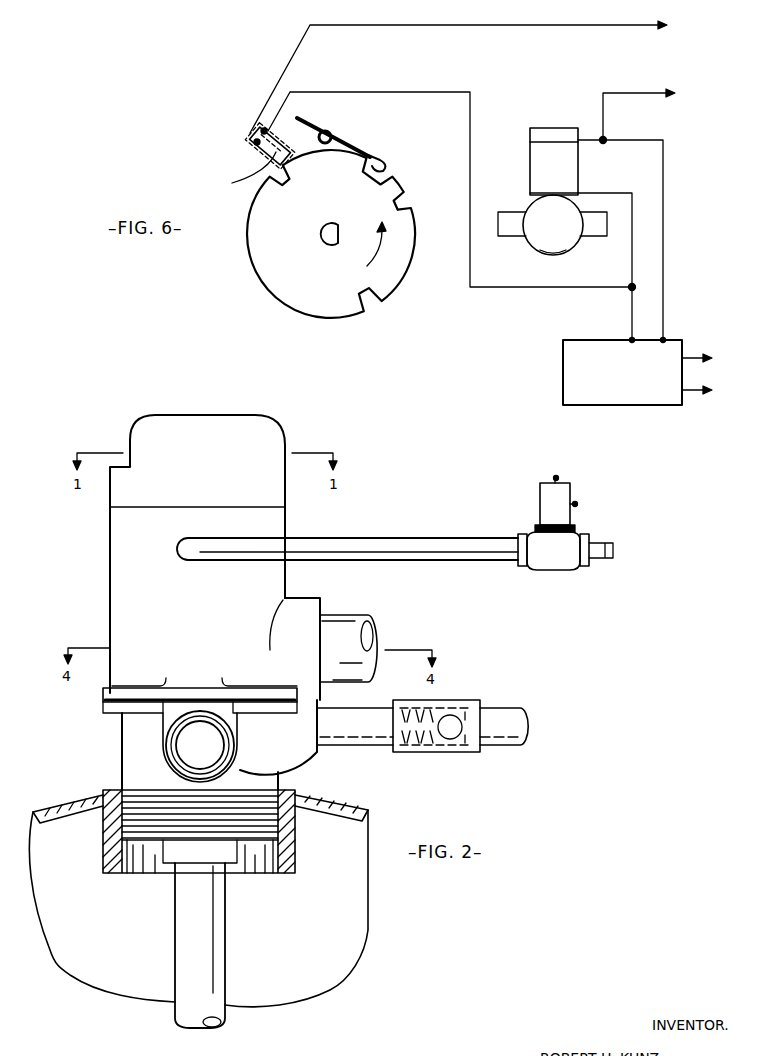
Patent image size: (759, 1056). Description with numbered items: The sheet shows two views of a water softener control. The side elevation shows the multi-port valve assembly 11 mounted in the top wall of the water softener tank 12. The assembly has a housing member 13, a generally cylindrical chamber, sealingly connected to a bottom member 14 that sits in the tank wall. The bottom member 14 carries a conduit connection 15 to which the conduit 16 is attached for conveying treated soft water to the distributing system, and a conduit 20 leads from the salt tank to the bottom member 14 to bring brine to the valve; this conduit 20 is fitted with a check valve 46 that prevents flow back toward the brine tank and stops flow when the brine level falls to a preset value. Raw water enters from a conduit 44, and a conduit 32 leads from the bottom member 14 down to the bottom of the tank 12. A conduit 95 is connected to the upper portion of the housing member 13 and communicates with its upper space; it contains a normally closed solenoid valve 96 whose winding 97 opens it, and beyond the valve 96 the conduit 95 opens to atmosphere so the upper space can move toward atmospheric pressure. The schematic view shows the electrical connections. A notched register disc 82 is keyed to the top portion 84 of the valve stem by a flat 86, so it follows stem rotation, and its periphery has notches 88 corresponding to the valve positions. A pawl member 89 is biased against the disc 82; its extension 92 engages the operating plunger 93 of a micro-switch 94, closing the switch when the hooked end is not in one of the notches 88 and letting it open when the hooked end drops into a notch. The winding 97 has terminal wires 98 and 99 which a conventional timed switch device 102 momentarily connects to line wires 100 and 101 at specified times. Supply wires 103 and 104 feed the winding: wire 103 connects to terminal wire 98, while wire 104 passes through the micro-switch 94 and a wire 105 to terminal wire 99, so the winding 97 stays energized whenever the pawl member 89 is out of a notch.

In FIG. 2, the multi-port valve assembly 11 is at (88, 693).
In FIG. 2, the tank 12 is at (82, 800).
In FIG. 2, the housing member 13 is at (113, 581).
In FIG. 2, the bottom member 14 is at (121, 742).
In FIG. 2, the conduit connection 15 is at (236, 743).
In FIG. 2, the conduit 16 is at (232, 757).
In FIG. 2, the conduit 20 is at (492, 711).
In FIG. 2, the conduit 32 is at (173, 933).
In FIG. 2, the conduit 44 is at (376, 654).
In FIG. 2, the check valve 46 is at (462, 753).
In FIG. 6, the register disc 82 is at (256, 267).
In FIG. 6, the top portion of stem 84 is at (323, 240).
In FIG. 6, the flat 86 is at (339, 234).
In FIG. 6, the notches 88 is at (412, 205).
In FIG. 6, the pawl member 89 is at (384, 158).
In FIG. 6, the extension 92 is at (320, 126).
In FIG. 6, the operating plunger 93 is at (290, 128).
In FIG. 6, the micro-switch 94 is at (240, 173).
In FIG. 6, the conduit 95 is at (514, 213).
In FIG. 2, the conduit 95 is at (425, 540).
In FIG. 6, the solenoid valve 96 is at (541, 248).
In FIG. 2, the solenoid valve 96 is at (562, 571).
In FIG. 6, the solenoid winding 97 is at (531, 162).
In FIG. 2, the solenoid winding 97 is at (545, 500).
In FIG. 6, the terminal wire 98 is at (665, 221).
In FIG. 2, the terminal wire 98 is at (559, 480).
In FIG. 6, the terminal wire 99 is at (632, 212).
In FIG. 2, the terminal wire 99 is at (577, 505).
In FIG. 6, the line wire 100 is at (714, 358).
In FIG. 6, the line wire 101 is at (714, 390).
In FIG. 6, the timed switch device 102 is at (632, 406).
In FIG. 6, the wire 103 is at (652, 115).
In FIG. 6, the wire 104 is at (476, 75).
In FIG. 6, the wire 105 is at (468, 93).